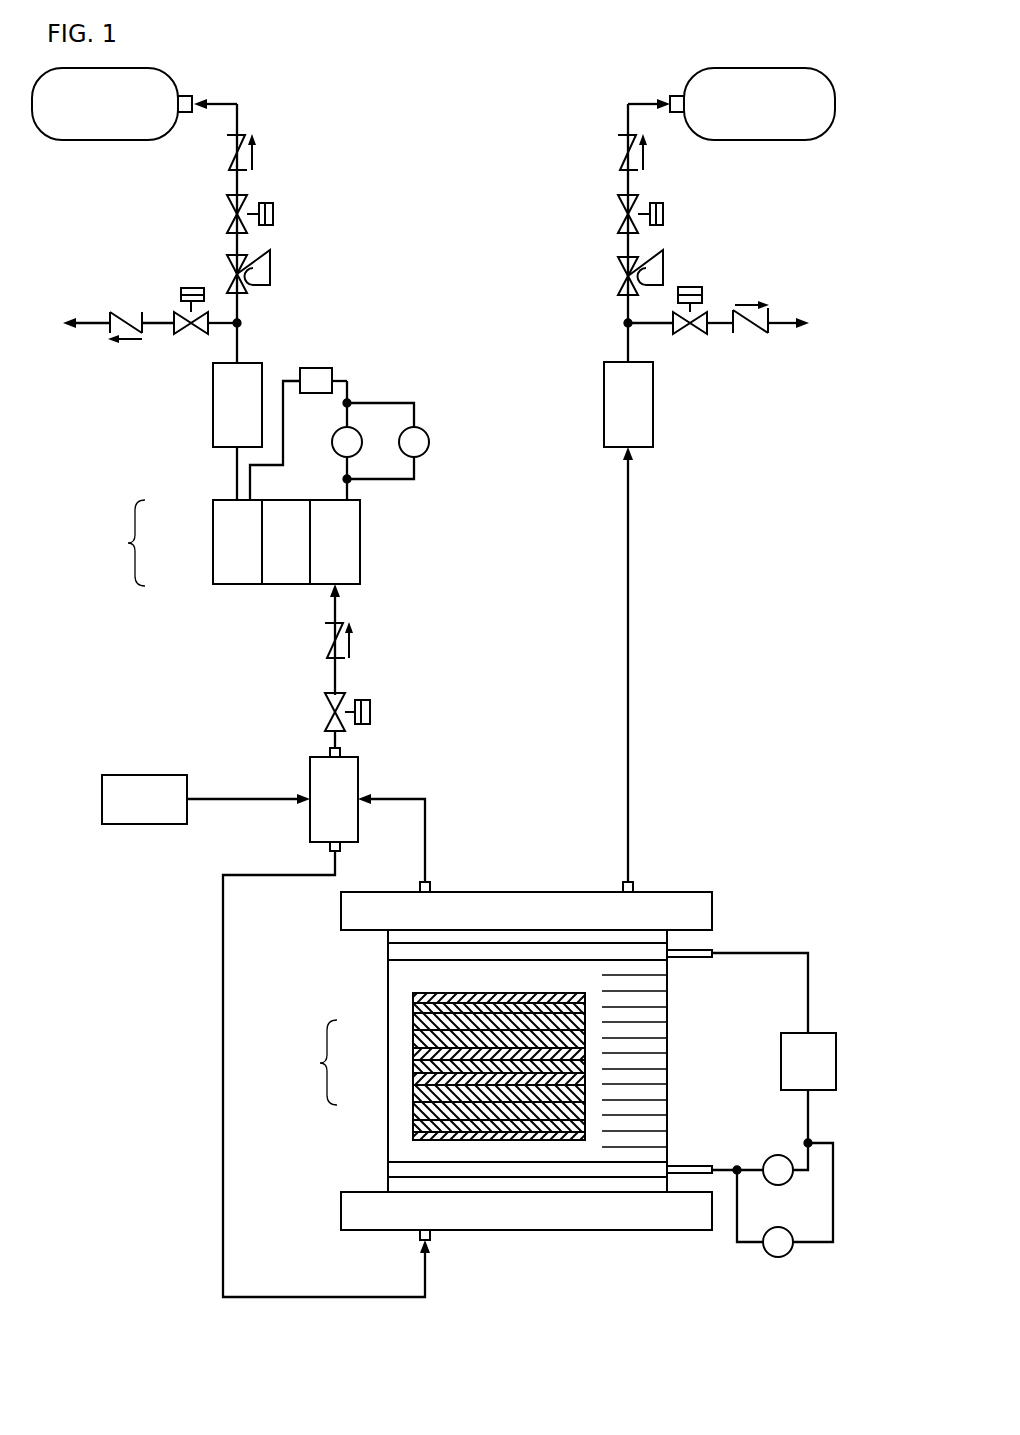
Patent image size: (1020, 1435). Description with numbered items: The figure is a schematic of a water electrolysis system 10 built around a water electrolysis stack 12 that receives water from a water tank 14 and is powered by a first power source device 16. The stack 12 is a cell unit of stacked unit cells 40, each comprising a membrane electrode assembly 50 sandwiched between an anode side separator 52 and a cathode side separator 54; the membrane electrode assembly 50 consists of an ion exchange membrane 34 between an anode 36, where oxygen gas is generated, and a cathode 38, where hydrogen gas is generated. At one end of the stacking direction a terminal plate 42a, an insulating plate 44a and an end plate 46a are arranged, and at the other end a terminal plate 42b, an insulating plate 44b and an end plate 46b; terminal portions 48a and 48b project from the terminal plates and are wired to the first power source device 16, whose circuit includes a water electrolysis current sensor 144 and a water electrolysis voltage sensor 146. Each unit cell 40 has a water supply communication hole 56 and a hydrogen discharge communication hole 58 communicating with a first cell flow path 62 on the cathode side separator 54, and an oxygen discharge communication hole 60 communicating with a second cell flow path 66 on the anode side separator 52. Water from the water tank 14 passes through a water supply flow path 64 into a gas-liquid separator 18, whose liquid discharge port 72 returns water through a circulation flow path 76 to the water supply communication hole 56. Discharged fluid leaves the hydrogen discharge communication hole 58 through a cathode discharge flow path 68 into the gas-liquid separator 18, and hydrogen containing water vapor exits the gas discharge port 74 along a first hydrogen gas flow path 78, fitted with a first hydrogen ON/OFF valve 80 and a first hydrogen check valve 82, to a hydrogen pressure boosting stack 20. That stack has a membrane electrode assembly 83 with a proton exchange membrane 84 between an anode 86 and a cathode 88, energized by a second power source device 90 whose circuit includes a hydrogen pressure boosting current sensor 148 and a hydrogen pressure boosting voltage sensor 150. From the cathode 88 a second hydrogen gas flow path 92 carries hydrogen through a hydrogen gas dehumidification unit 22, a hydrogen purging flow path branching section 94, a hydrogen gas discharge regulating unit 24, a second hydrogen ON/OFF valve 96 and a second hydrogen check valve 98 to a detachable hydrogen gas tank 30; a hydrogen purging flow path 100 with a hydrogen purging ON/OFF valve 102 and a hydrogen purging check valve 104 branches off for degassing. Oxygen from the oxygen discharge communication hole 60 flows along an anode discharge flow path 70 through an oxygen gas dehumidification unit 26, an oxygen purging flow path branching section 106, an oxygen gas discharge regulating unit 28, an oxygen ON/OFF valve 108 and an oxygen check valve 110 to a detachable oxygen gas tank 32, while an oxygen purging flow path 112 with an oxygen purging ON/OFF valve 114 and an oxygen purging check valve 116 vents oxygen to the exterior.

The water electrolysis system 10 is at (464, 50).
The water electrolysis stack 12 is at (712, 832).
The water tank 14 is at (125, 775).
The first power source device 16 is at (823, 1033).
The gas-liquid separator 18 is at (300, 782).
The hydrogen pressure boosting stack 20 is at (382, 535).
The hydrogen gas dehumidification unit 22 is at (213, 419).
The hydrogen gas discharge regulating unit 24 is at (293, 263).
The oxygen gas dehumidification unit 26 is at (655, 404).
The oxygen gas discharge regulating unit 28 is at (600, 272).
The hydrogen gas tank 30 is at (172, 76).
The oxygen gas tank 32 is at (695, 78).
The ion exchange membrane 34 is at (422, 1068).
The anode 36 is at (420, 1053).
The cathode 38 is at (422, 1078).
The unit cells 40 is at (676, 1048).
The terminal plate 42a is at (572, 952).
The terminal plate 42b is at (612, 1170).
The insulating plate 44a is at (598, 937).
The insulating plate 44b is at (642, 1185).
The end plate 46a is at (705, 910).
The end plate 46b is at (345, 1208).
The terminal portion 48a is at (697, 958).
The terminal portion 48b is at (697, 1166).
The membrane electrode assembly 50 is at (440, 1064).
The anode side separator 52 is at (458, 1040).
The cathode side separator 54 is at (523, 1092).
The water supply communication hole 56 is at (432, 1238).
The hydrogen discharge communication hole 58 is at (420, 884).
The oxygen discharge communication hole 60 is at (634, 884).
The first cell flow path 62 is at (535, 1098).
The water supply flow path 64 is at (210, 801).
The second cell flow path 66 is at (524, 1042).
The cathode discharge flow path 68 is at (401, 799).
The anode discharge flow path 70 is at (631, 658).
The liquid discharge port 72 is at (328, 847).
The gas discharge port 74 is at (330, 752).
The circulation flow path 76 is at (223, 962).
The first hydrogen gas flow path 78 is at (333, 678).
The first hydrogen ON/OFF valve 80 is at (372, 712).
The first hydrogen check valve 82 is at (325, 645).
The membrane electrode assembly 83 is at (232, 544).
The proton exchange membrane 84 is at (285, 530).
The anode 86 is at (330, 570).
The cathode 88 is at (230, 519).
The second power source device 90 is at (318, 368).
The second hydrogen gas flow path 92 is at (237, 470).
The hydrogen purging flow path branching section 94 is at (243, 323).
The second hydrogen ON/OFF valve 96 is at (275, 209).
The second hydrogen check valve 98 is at (230, 158).
The hydrogen purging flow path 100 is at (160, 318).
The hydrogen purging ON/OFF valve 102 is at (203, 330).
The hydrogen purging check valve 104 is at (118, 312).
The oxygen purging flow path branching section 106 is at (623, 323).
The oxygen ON/OFF valve 108 is at (620, 205).
The oxygen check valve 110 is at (618, 155).
The oxygen purging flow path 112 is at (718, 325).
The oxygen purging ON/OFF valve 114 is at (694, 287).
The oxygen purging check valve 116 is at (758, 337).
The water electrolysis current sensor 144 is at (774, 1156).
The water electrolysis voltage sensor 146 is at (784, 1257).
The hydrogen pressure boosting current sensor 148 is at (362, 442).
The hydrogen pressure boosting voltage sensor 150 is at (427, 453).